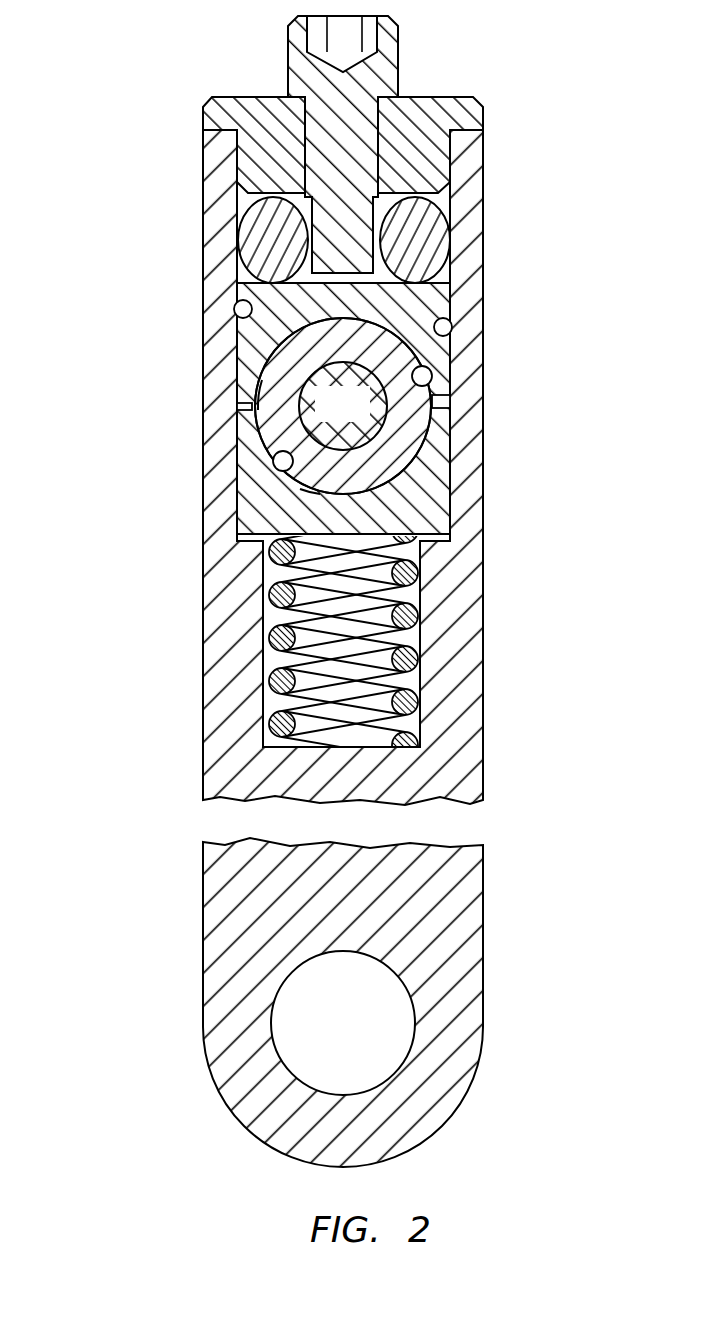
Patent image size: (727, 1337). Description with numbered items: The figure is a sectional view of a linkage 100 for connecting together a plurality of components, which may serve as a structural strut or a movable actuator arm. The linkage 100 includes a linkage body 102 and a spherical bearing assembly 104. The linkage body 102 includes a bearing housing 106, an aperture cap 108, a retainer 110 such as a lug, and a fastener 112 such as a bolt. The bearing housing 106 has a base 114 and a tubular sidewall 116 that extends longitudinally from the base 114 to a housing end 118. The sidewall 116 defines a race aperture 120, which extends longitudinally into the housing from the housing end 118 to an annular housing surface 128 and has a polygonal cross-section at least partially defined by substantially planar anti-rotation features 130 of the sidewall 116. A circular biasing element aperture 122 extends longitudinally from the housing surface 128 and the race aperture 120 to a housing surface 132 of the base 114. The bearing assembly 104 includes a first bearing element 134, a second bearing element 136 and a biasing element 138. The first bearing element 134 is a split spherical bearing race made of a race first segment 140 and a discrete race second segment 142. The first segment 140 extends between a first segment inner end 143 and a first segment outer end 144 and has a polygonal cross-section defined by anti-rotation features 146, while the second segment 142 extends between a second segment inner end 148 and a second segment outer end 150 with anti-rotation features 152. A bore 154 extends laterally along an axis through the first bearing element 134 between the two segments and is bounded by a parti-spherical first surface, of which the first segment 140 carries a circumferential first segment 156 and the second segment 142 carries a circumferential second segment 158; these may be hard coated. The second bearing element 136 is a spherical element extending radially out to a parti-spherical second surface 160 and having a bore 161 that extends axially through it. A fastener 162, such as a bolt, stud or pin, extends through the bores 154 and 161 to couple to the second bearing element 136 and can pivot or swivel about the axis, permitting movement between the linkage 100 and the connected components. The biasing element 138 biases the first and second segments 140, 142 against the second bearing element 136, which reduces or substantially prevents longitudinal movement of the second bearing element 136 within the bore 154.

The linkage 100 is at (125, 72).
The linkage body 102 is at (202, 755).
The spherical bearing assembly 104 is at (157, 595).
The bearing housing 106 is at (202, 458).
The aperture cap 108 is at (478, 112).
The retainer 110 is at (438, 242).
The fastener 112 is at (393, 68).
The base 114 is at (470, 788).
The sidewall 116 is at (470, 658).
The housing end 118 is at (212, 125).
The race aperture 120 is at (447, 273).
The biasing element aperture 122 is at (412, 682).
The housing surface 128 is at (237, 541).
The anti-rotation features 130 is at (245, 316).
The housing surface 132 is at (380, 728).
The first bearing element 134 is at (237, 345).
The second bearing element 136 is at (272, 398).
The biasing element 138 is at (423, 620).
The race first segment 140 is at (430, 497).
The race second segment 142 is at (440, 363).
The first segment inner end 143 is at (247, 408).
The first segment outer end 144 is at (465, 573).
The anti-rotation features 146 is at (237, 493).
The second segment inner end 148 is at (433, 420).
The second segment outer end 150 is at (240, 270).
The anti-rotation features 152 is at (247, 328).
The bore 154 is at (307, 500).
The circumferential first segment of the first surface 156 is at (288, 473).
The circumferential second segment of the first surface 158 is at (432, 395).
The second surface 160 is at (425, 457).
The bore 161 is at (372, 450).
The fastener 162 is at (365, 418).